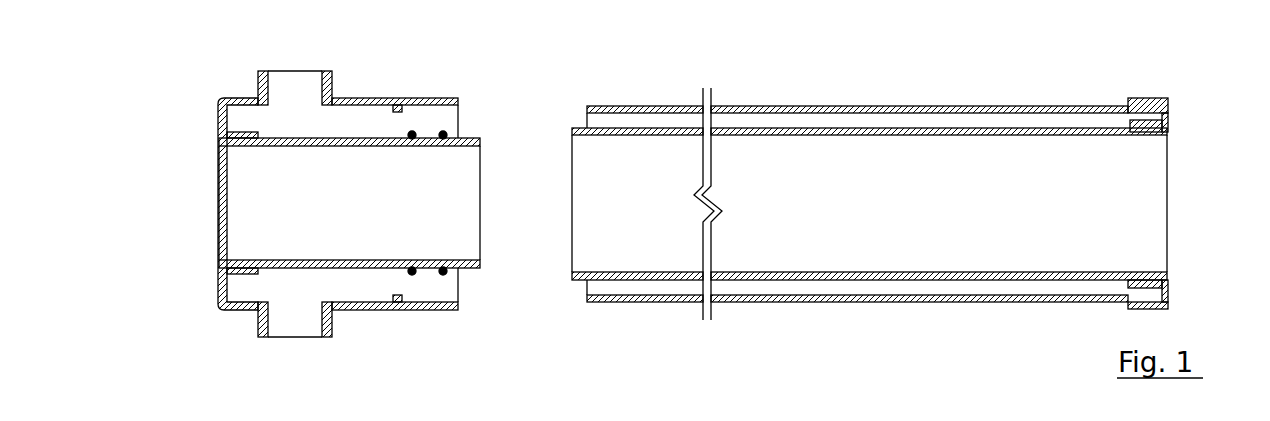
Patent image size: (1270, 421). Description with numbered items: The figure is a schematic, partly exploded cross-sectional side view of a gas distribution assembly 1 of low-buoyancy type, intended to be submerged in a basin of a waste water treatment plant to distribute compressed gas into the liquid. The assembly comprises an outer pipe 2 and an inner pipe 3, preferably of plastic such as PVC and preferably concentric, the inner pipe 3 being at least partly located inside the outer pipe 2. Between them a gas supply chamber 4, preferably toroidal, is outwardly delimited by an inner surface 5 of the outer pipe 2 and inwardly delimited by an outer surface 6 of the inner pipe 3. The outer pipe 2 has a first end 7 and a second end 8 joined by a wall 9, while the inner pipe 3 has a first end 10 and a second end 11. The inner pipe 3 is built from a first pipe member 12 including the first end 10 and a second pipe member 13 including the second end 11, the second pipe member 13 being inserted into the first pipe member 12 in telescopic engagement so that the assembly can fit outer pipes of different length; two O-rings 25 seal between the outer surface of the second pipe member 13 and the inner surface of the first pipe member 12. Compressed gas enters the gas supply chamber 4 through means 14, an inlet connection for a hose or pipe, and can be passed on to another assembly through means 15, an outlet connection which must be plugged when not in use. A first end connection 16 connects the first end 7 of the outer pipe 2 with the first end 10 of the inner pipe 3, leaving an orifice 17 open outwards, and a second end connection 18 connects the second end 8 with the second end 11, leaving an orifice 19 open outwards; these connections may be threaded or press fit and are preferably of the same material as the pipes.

The gas distribution assembly 1 is at (133, 322).
The outer pipe 2 is at (783, 304).
The inner pipe 3 is at (840, 281).
The gas supply chamber 4 is at (909, 287).
The inner surface of the outer pipe 5 is at (967, 297).
The outer surface of the inner pipe 6 is at (1010, 279).
The first end of the outer pipe 7 is at (1156, 98).
The second end of the outer pipe 8 is at (590, 106).
The wall 9 is at (668, 106).
The first end of the inner pipe 10 is at (1153, 272).
The second end of the inner pipe 11 is at (238, 262).
The first pipe member 12 is at (758, 128).
The second pipe member 13 is at (369, 138).
The means for supplying compressed gas 14 is at (295, 70).
The means for supplying compressed gas from the gas supply chamber 15 is at (295, 338).
The first end connection 16 is at (1171, 111).
The orifice of the first end of the inner pipe 17 is at (1168, 203).
The second end connection 18 is at (212, 102).
The orifice of the second end of the inner pipe 19 is at (219, 203).
The O-rings 25 is at (443, 275).